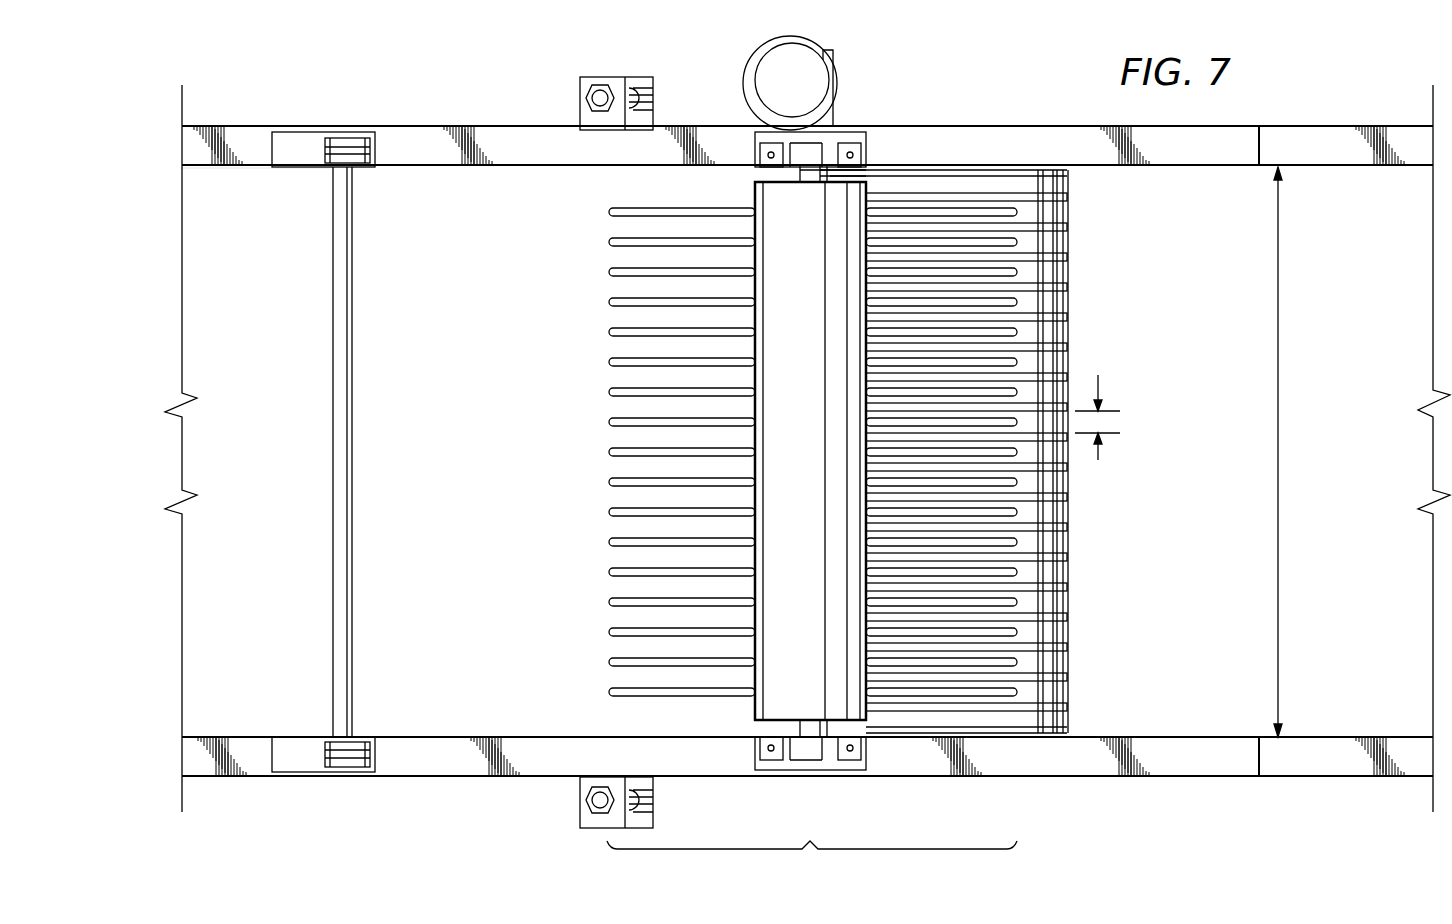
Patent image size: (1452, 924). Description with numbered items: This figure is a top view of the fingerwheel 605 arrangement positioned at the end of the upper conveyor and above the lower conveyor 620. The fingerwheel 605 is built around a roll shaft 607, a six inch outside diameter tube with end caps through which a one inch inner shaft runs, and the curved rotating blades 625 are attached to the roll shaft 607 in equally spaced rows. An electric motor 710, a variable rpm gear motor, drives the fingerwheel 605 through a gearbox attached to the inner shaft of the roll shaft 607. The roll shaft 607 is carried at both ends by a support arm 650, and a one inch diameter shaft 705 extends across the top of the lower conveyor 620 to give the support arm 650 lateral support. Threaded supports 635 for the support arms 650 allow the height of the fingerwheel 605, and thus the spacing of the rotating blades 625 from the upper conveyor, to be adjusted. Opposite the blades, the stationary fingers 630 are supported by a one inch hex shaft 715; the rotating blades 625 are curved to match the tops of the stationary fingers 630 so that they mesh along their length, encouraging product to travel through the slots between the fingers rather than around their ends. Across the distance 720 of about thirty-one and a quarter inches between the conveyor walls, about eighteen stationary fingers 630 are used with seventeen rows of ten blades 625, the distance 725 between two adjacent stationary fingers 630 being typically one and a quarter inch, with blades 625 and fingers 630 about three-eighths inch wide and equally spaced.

The fingerwheel 605 is at (835, 530).
The roll shaft 607 is at (753, 703).
The lower conveyor 620 is at (185, 196).
The rotating blades 625 is at (607, 302).
The stationary fingers 630 is at (1033, 541).
The threaded supports 635 is at (600, 85).
The support arm 650 is at (405, 142).
The shaft 705 is at (333, 519).
The electric motor 710 is at (746, 70).
The hex shaft 715 is at (1064, 302).
The distance 720 is at (1278, 325).
The distance 725 is at (1118, 425).